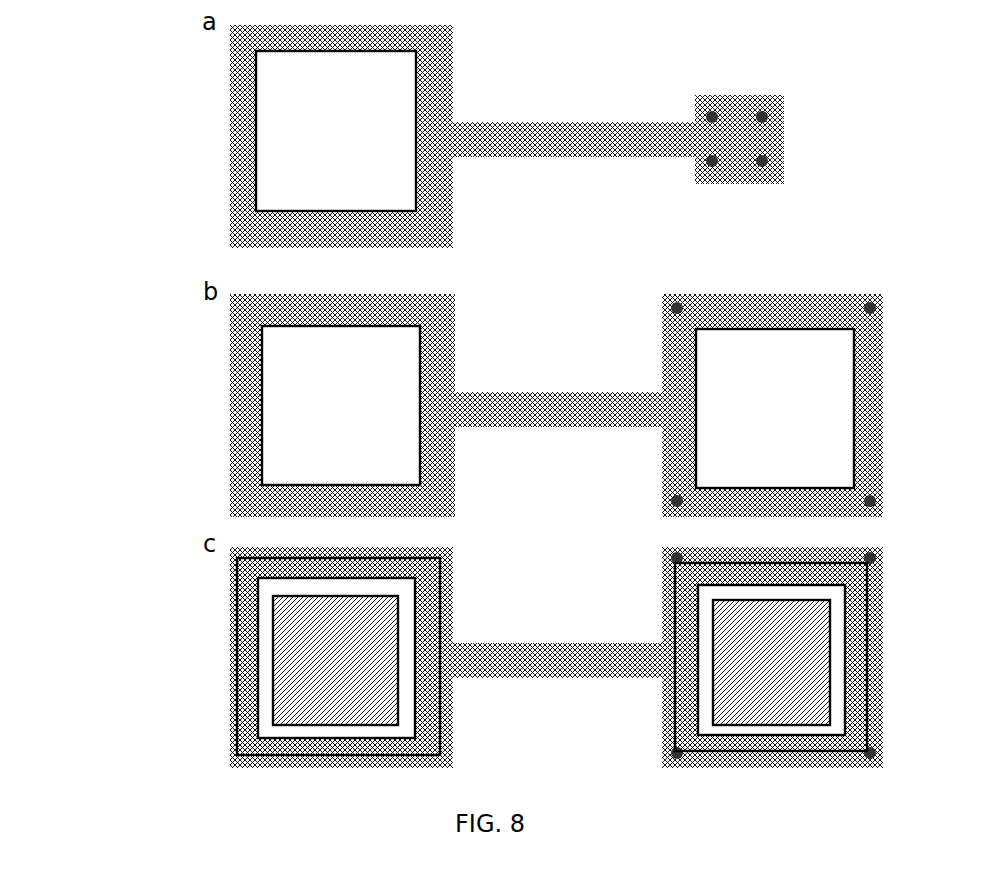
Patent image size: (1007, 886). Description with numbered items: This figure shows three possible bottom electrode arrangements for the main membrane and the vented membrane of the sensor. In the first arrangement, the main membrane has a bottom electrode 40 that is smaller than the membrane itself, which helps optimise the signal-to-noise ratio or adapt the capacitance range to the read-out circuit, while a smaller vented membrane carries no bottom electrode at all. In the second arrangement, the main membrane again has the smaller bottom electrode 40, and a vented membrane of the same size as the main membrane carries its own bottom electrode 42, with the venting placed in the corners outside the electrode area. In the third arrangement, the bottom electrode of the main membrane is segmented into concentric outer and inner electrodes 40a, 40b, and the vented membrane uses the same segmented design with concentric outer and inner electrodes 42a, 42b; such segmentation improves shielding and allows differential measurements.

The bottom electrode 40 is at (256, 148).
The bottom electrode 42 is at (854, 435).
The outer electrode 40a is at (245, 628).
The inner electrode 40b is at (293, 691).
The outer electrode 42a is at (857, 622).
The inner electrode 42b is at (797, 670).